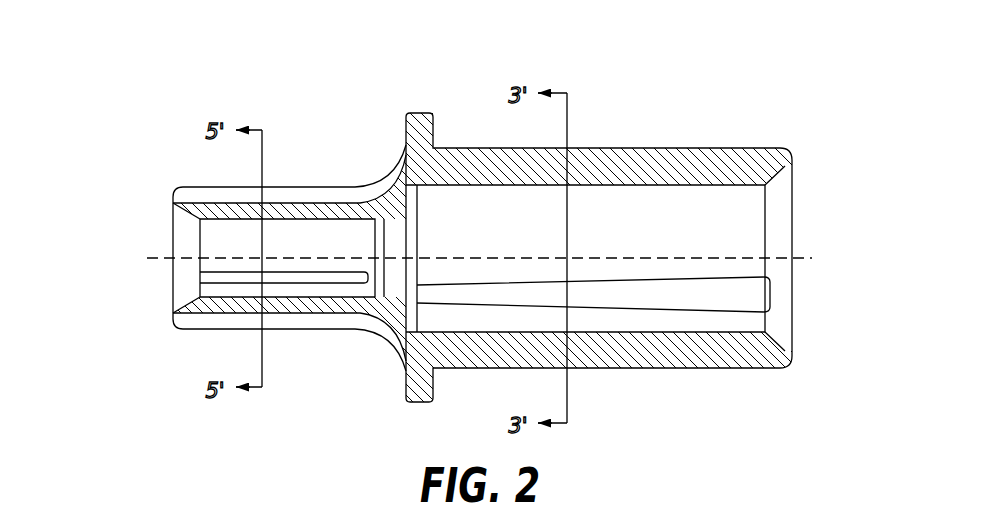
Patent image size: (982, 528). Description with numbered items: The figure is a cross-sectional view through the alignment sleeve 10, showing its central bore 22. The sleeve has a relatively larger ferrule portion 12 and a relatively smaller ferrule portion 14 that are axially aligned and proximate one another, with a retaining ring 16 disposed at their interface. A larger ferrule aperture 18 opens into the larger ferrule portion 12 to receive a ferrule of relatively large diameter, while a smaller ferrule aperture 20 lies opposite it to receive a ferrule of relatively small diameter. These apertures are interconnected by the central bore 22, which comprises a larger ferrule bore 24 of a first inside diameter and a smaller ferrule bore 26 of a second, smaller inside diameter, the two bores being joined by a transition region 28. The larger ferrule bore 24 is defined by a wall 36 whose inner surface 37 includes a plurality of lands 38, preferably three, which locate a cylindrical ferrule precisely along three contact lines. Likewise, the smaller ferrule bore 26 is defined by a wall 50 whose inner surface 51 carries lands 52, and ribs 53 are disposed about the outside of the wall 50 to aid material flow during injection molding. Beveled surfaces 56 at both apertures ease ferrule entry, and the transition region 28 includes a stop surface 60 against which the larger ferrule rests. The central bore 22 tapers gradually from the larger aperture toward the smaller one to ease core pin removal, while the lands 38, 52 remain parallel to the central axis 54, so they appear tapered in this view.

The alignment sleeve 10 is at (590, 43).
The larger ferrule portion 12 is at (617, 126).
The smaller ferrule portion 14 is at (290, 146).
The retaining ring 16 is at (408, 111).
The larger ferrule aperture 18 is at (815, 320).
The smaller ferrule aperture 20 is at (122, 283).
The central bore 22 is at (732, 225).
The larger ferrule bore 24 is at (660, 211).
The smaller ferrule bore 26 is at (334, 241).
The transition region 28 is at (395, 277).
The wall 36 is at (615, 353).
The inner surface 37 is at (700, 187).
The lands 38 is at (708, 298).
The wall 50 is at (327, 303).
The inner surface 51 is at (240, 221).
The lands 52 is at (285, 276).
The ribs 53 is at (202, 195).
The central axis 54 is at (808, 253).
The beveled surfaces 56 is at (187, 292).
The stop surface 60 is at (418, 288).